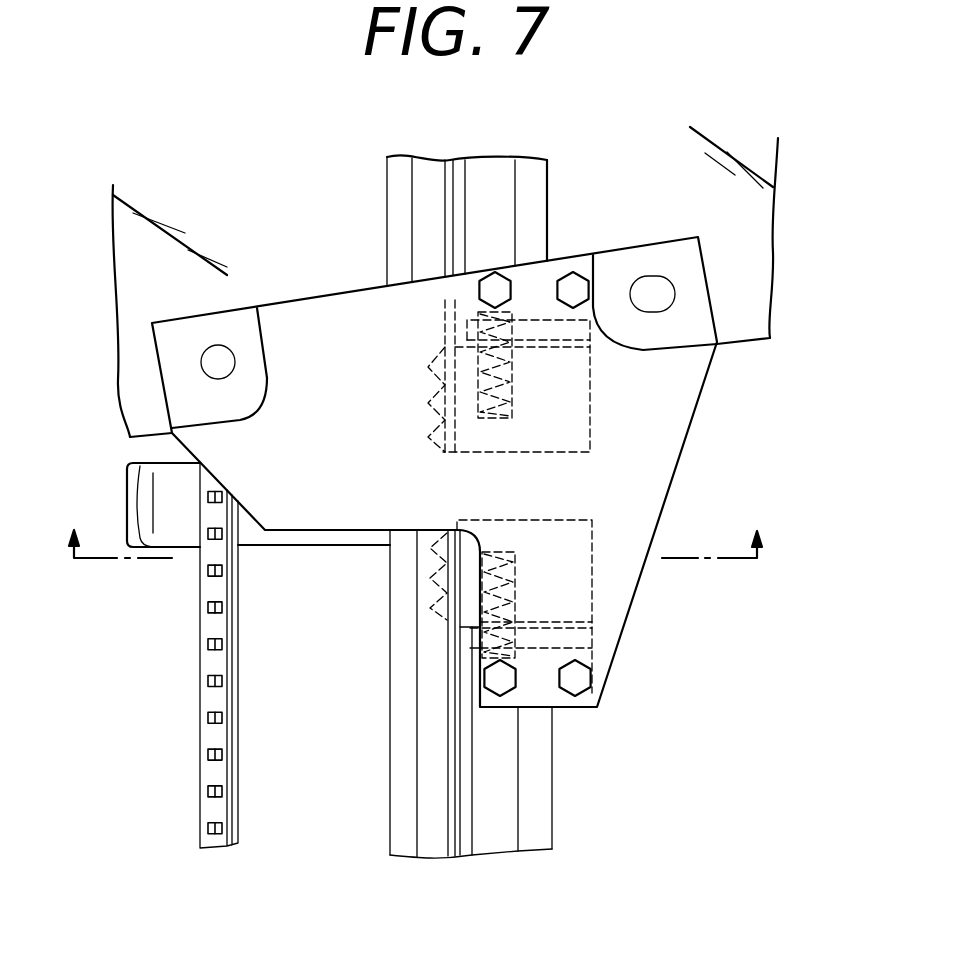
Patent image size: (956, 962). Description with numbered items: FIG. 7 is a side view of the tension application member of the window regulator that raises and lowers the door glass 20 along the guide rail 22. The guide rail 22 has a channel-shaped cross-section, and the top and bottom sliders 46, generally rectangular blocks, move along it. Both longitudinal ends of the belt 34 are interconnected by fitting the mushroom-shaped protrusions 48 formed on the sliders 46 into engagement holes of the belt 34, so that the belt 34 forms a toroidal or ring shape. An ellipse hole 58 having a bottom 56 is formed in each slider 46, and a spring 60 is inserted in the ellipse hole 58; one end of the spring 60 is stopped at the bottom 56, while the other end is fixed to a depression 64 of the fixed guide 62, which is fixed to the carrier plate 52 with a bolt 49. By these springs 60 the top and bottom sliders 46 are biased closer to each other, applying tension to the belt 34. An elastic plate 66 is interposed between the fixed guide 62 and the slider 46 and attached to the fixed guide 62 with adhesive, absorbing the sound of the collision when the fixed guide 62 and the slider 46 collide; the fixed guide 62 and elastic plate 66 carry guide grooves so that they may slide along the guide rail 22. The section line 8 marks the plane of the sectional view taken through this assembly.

The section line 8- 8 is at (416, 528).
The door glass 20 is at (747, 287).
The guide rail 22 is at (402, 772).
The belt 34 is at (443, 303).
The slider 46 is at (570, 430).
The mushroom-shaped protrusion 48 is at (432, 390).
The bolt 49 is at (495, 275).
The carrier plate 52 is at (655, 468).
The bottom 56 is at (512, 408).
The ellipse hole 58 is at (515, 590).
The spring 60 is at (490, 420).
The fixed guide 62 is at (567, 270).
The depression 64 is at (513, 314).
The elastic plate 66 is at (577, 327).